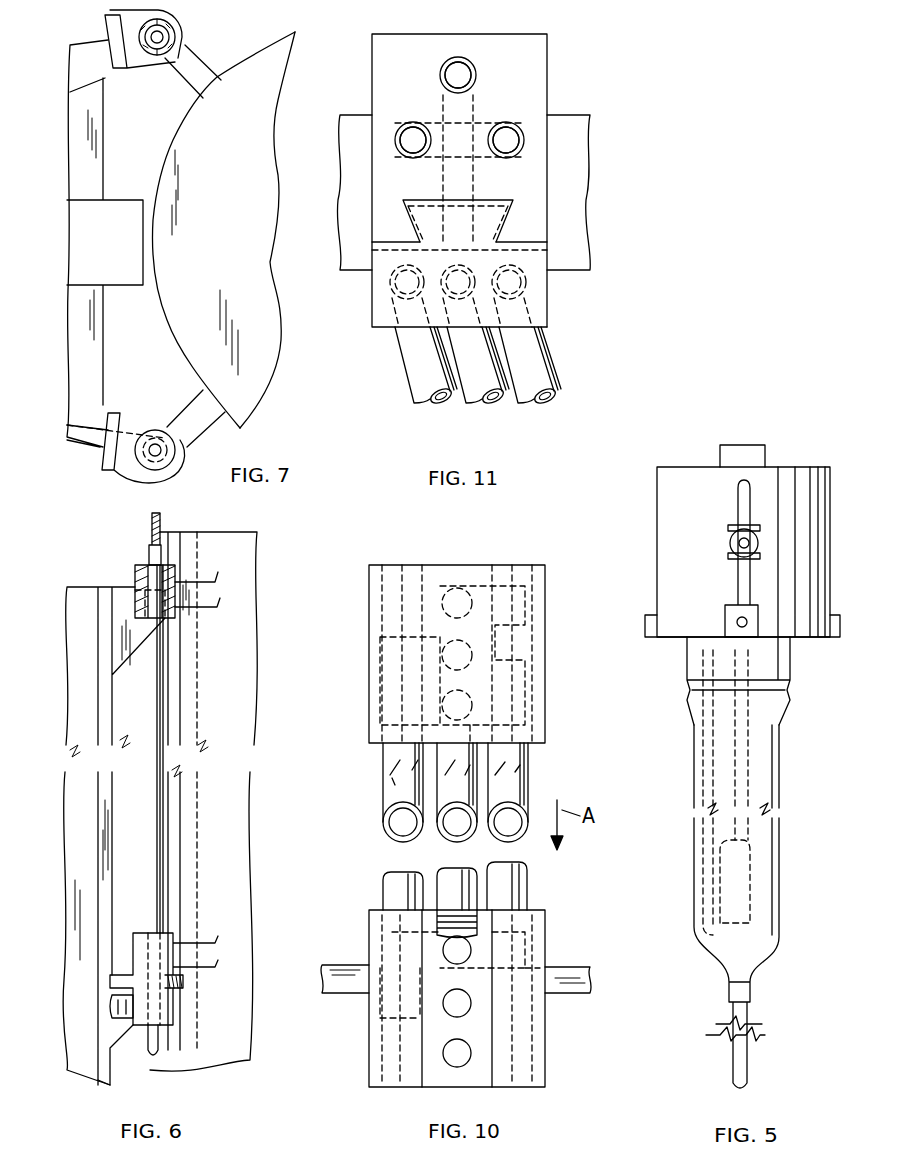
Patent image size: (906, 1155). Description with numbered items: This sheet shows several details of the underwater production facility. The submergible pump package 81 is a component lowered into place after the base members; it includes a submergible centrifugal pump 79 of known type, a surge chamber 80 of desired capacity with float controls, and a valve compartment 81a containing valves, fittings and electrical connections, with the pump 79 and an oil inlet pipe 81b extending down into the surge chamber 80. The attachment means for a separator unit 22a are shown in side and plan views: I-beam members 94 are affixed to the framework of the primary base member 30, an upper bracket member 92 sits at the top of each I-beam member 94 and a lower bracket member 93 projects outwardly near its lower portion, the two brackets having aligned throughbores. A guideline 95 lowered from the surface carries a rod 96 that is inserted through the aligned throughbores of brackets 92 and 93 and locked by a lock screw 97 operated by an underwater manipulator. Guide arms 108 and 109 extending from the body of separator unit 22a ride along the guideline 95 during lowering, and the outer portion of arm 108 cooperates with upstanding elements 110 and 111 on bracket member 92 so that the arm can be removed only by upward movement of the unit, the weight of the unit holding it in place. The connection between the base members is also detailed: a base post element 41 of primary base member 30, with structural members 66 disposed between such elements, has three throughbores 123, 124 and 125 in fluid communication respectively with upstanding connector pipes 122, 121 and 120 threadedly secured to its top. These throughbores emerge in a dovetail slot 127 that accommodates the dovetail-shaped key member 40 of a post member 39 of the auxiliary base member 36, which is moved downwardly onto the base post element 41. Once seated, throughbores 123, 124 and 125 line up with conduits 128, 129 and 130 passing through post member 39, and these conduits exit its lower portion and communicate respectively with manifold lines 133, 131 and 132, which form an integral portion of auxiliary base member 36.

In FIG. 7, the separator unit 22a is at (242, 273).
In FIG. 6, the separator unit 22a is at (237, 712).
In FIG. 7, the primary base member 30 is at (100, 336).
In FIG. 11, the primary base member 30 is at (548, 64).
In FIG. 10, the primary base member 30 is at (378, 1055).
In FIG. 6, the primary base member 30 is at (78, 622).
In FIG. 11, the auxiliary base member 36 is at (376, 312).
In FIG. 10, the auxiliary base member 36 is at (540, 688).
In FIG. 11, the post member 39 is at (535, 286).
In FIG. 10, the post member 39 is at (476, 570).
In FIG. 11, the dovetail-shaped key member 40 is at (500, 218).
In FIG. 10, the dovetail-shaped key member 40 is at (381, 568).
In FIG. 11, the base post element 41 is at (417, 94).
In FIG. 10, the base post element 41 is at (535, 1061).
In FIG. 6, the base post element 41 is at (105, 1075).
In FIG. 10, the structural members 66 is at (570, 977).
In FIG. 5, the submergible centrifugal pump 79 is at (750, 862).
In FIG. 5, the surge chamber 80 is at (780, 768).
In FIG. 5, the submergible pump package 81 is at (790, 669).
In FIG. 5, the valve compartment 81a is at (812, 533).
In FIG. 5, the oil inlet pipe 81b is at (703, 870).
In FIG. 7, the upper bracket member 92 is at (122, 12).
In FIG. 6, the upper bracket member 92 is at (122, 593).
In FIG. 6, the lower bracket member 93 is at (155, 1050).
In FIG. 7, the I-beam member 94 is at (90, 447).
In FIG. 6, the guideline 95 is at (162, 527).
In FIG. 6, the rod 96 is at (164, 660).
In FIG. 6, the lock screw 97 is at (112, 1005).
In FIG. 7, the guide arm 108 is at (193, 62).
In FIG. 6, the guide arm 108 is at (198, 582).
In FIG. 6, the guide arm 109 is at (186, 945).
In FIG. 7, the upstanding element 110 is at (170, 30).
In FIG. 7, the upstanding element 111 is at (175, 465).
In FIG. 11, the upstanding connector pipe 120 is at (472, 68).
In FIG. 10, the upstanding connector pipe 120 is at (450, 880).
In FIG. 11, the upstanding connector pipe 121 is at (405, 125).
In FIG. 10, the upstanding connector pipe 121 is at (395, 893).
In FIG. 11, the upstanding connector pipe 122 is at (520, 128).
In FIG. 10, the upstanding connector pipe 122 is at (527, 889).
In FIG. 11, the throughbore 123 is at (508, 140).
In FIG. 10, the throughbore 123 is at (445, 952).
In FIG. 11, the throughbore 124 is at (415, 150).
In FIG. 10, the throughbore 124 is at (465, 1003).
In FIG. 11, the throughbore 125 is at (455, 72).
In FIG. 10, the throughbore 125 is at (452, 1062).
In FIG. 10, the dovetail slot 127 is at (480, 950).
In FIG. 10, the conduit 128 is at (455, 592).
In FIG. 10, the conduit 129 is at (452, 645).
In FIG. 10, the conduit 130 is at (452, 700).
In FIG. 11, the manifold line 131 is at (406, 384).
In FIG. 10, the manifold line 131 is at (395, 808).
In FIG. 11, the manifold line 132 is at (480, 392).
In FIG. 10, the manifold line 132 is at (450, 838).
In FIG. 11, the manifold line 133 is at (547, 351).
In FIG. 10, the manifold line 133 is at (522, 810).